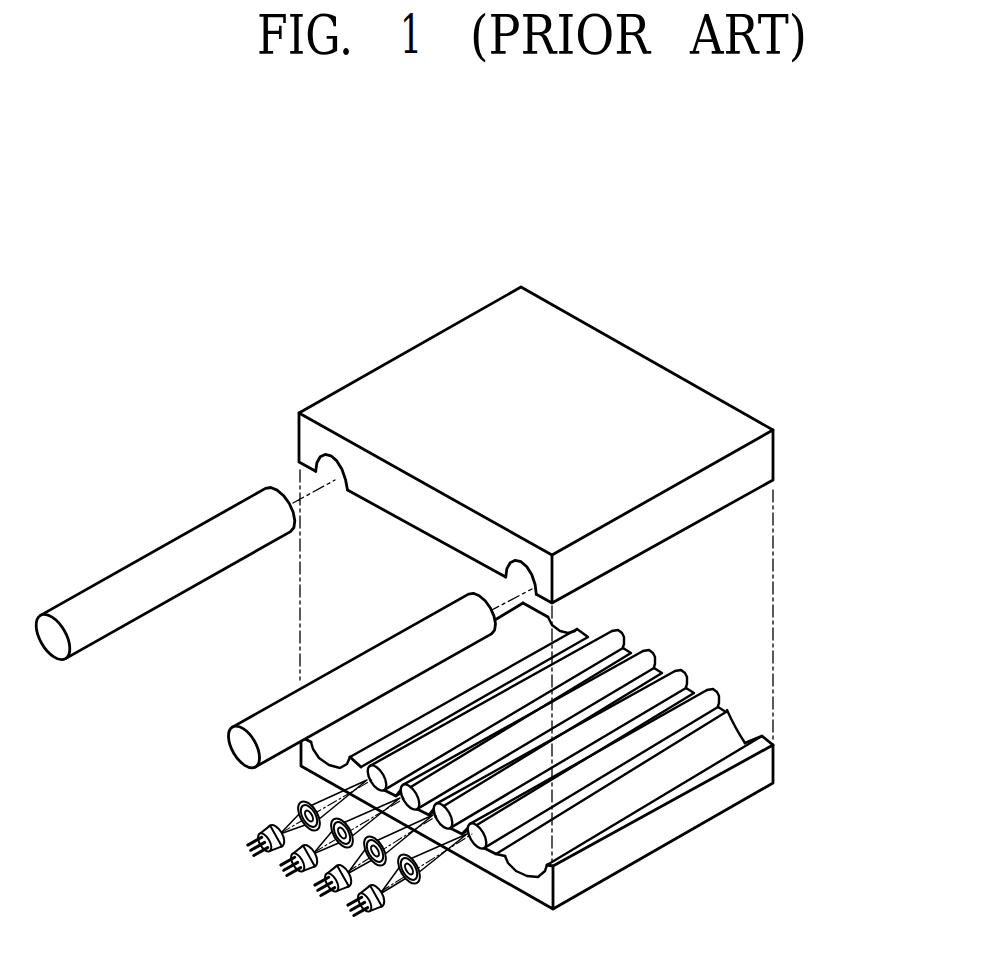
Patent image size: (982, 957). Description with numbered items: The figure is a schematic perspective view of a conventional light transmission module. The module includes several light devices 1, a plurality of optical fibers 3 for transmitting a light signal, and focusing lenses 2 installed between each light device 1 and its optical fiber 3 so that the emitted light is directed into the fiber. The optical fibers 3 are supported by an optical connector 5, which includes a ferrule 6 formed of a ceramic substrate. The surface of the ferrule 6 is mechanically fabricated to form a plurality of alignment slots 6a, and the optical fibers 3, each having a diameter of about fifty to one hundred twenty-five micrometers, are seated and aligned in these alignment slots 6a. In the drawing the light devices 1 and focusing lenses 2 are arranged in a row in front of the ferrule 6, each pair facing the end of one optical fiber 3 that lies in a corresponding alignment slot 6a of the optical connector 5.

The light device 1 is at (264, 852).
The focusing lens 2 is at (301, 805).
The optical fiber 3 is at (722, 678).
The optical connector 5 is at (574, 598).
The ferrule 6 is at (578, 752).
The alignment slot 6a is at (592, 643).